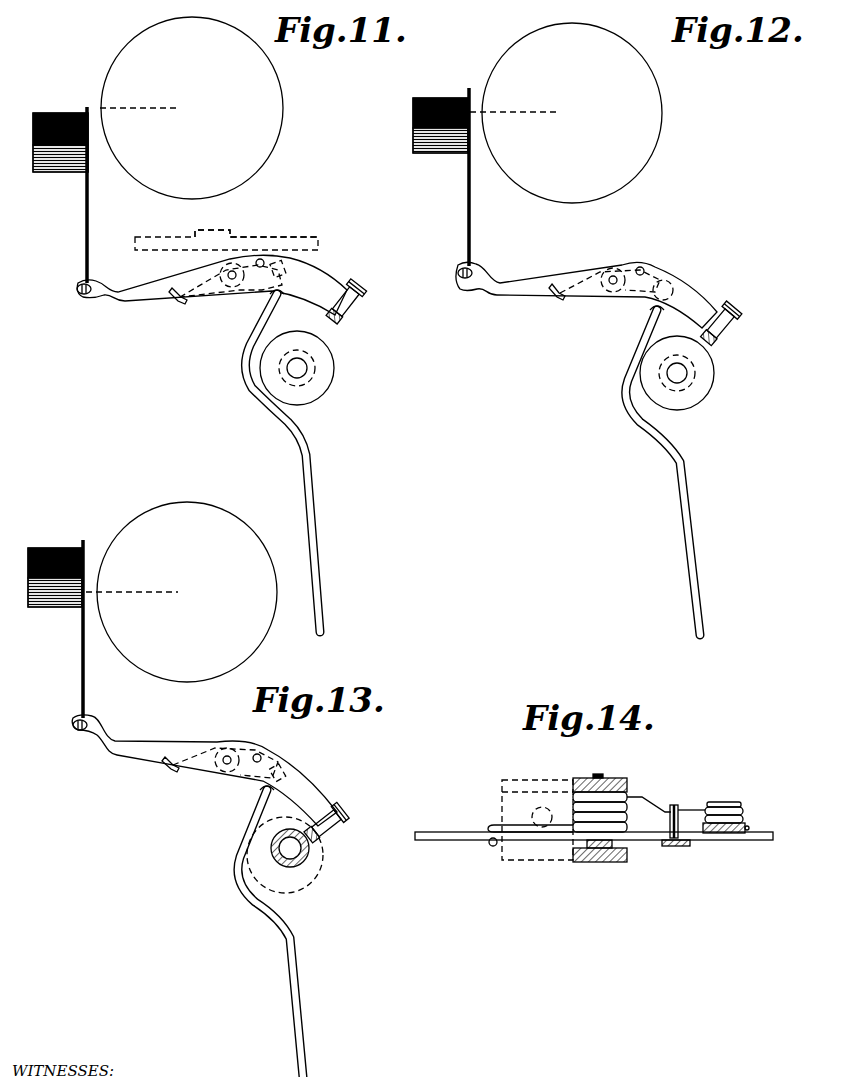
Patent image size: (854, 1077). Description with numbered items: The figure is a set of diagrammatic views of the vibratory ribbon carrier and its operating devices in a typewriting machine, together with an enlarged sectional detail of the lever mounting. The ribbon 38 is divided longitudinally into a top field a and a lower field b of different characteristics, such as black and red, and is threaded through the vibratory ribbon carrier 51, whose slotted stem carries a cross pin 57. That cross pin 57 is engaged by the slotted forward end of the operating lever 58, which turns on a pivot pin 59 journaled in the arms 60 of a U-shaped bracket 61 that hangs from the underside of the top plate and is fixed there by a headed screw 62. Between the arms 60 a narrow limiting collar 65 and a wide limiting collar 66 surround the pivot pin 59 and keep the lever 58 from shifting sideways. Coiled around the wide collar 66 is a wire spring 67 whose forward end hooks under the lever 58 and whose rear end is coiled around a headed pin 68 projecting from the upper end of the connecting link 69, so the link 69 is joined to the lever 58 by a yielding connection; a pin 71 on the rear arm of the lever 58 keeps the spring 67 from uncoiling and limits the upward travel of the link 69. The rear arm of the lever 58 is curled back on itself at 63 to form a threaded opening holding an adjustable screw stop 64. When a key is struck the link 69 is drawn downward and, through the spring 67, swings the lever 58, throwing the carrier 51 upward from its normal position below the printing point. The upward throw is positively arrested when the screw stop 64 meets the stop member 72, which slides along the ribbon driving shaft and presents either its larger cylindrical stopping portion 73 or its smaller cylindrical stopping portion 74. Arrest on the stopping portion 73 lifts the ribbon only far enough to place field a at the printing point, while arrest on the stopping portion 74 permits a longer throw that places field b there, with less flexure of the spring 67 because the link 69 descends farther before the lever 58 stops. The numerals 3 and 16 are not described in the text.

In FIG. 11, the frame 3 is at (300, 241).
In FIG. 12, the platen 16 is at (660, 115).
In FIG. 13, the platen 16 is at (262, 626).
In FIG. 11, the ribbon 38 is at (70, 116).
In FIG. 12, the ribbon 38 is at (450, 98).
In FIG. 13, the ribbon 38 is at (70, 548).
In FIG. 11, the ribbon field a is at (43, 114).
In FIG. 12, the ribbon field a is at (440, 102).
In FIG. 13, the ribbon field a is at (40, 548).
In FIG. 11, the ribbon field b is at (60, 170).
In FIG. 12, the ribbon field b is at (433, 153).
In FIG. 13, the ribbon field b is at (57, 607).
In FIG. 11, the vibratory ribbon carrier 51 is at (89, 192).
In FIG. 12, the vibratory ribbon carrier 51 is at (470, 195).
In FIG. 13, the vibratory ribbon carrier 51 is at (85, 661).
In FIG. 11, the cross pin 57 is at (77, 291).
In FIG. 12, the cross pin 57 is at (458, 273).
In FIG. 13, the cross pin 57 is at (73, 725).
In FIG. 11, the operating lever 58 is at (152, 301).
In FIG. 12, the operating lever 58 is at (525, 297).
In FIG. 13, the operating lever 58 is at (144, 765).
In FIG. 14, the operating lever 58 is at (460, 840).
In FIG. 11, the pivot pin 59 is at (232, 280).
In FIG. 12, the pivot pin 59 is at (613, 285).
In FIG. 13, the pivot pin 59 is at (227, 755).
In FIG. 14, the pivot pin 59 is at (600, 774).
In FIG. 11, the bracket arms 60 is at (190, 266).
In FIG. 14, the bracket arms 60 is at (628, 785).
In FIG. 11, the U-shaped bracket 61 is at (183, 258).
In FIG. 14, the U-shaped bracket 61 is at (514, 800).
In FIG. 11, the headed screw 62 is at (200, 232).
In FIG. 11, the curled end 63 is at (352, 308).
In FIG. 12, the curled end 63 is at (733, 332).
In FIG. 13, the curled end 63 is at (340, 806).
In FIG. 11, the screw stop 64 is at (338, 325).
In FIG. 12, the screw stop 64 is at (712, 346).
In FIG. 13, the screw stop 64 is at (302, 833).
In FIG. 14, the limiting collar 65 is at (593, 848).
In FIG. 14, the limiting collar 66 is at (612, 793).
In FIG. 11, the wire spring 67 is at (181, 301).
In FIG. 12, the wire spring 67 is at (588, 293).
In FIG. 13, the wire spring 67 is at (193, 770).
In FIG. 14, the wire spring 67 is at (491, 825).
In FIG. 11, the headed pin 68 is at (290, 266).
In FIG. 12, the headed pin 68 is at (673, 288).
In FIG. 13, the headed pin 68 is at (286, 772).
In FIG. 14, the headed pin 68 is at (708, 846).
In FIG. 11, the connecting link 69 is at (300, 453).
In FIG. 12, the connecting link 69 is at (694, 522).
In FIG. 13, the connecting link 69 is at (298, 955).
In FIG. 14, the connecting link 69 is at (747, 823).
In FIG. 11, the pin 71 is at (262, 259).
In FIG. 12, the pin 71 is at (644, 269).
In FIG. 13, the pin 71 is at (261, 759).
In FIG. 14, the pin 71 is at (677, 810).
In FIG. 11, the stop member 72 is at (302, 357).
In FIG. 12, the stop member 72 is at (676, 371).
In FIG. 13, the stop member 72 is at (287, 848).
In FIG. 11, the cylindrical stopping portion 73 is at (331, 374).
In FIG. 12, the cylindrical stopping portion 73 is at (710, 396).
In FIG. 13, the cylindrical stopping portion 73 is at (318, 872).
In FIG. 11, the cylindrical stopping portion 74 is at (297, 355).
In FIG. 12, the cylindrical stopping portion 74 is at (690, 384).
In FIG. 13, the cylindrical stopping portion 74 is at (312, 850).